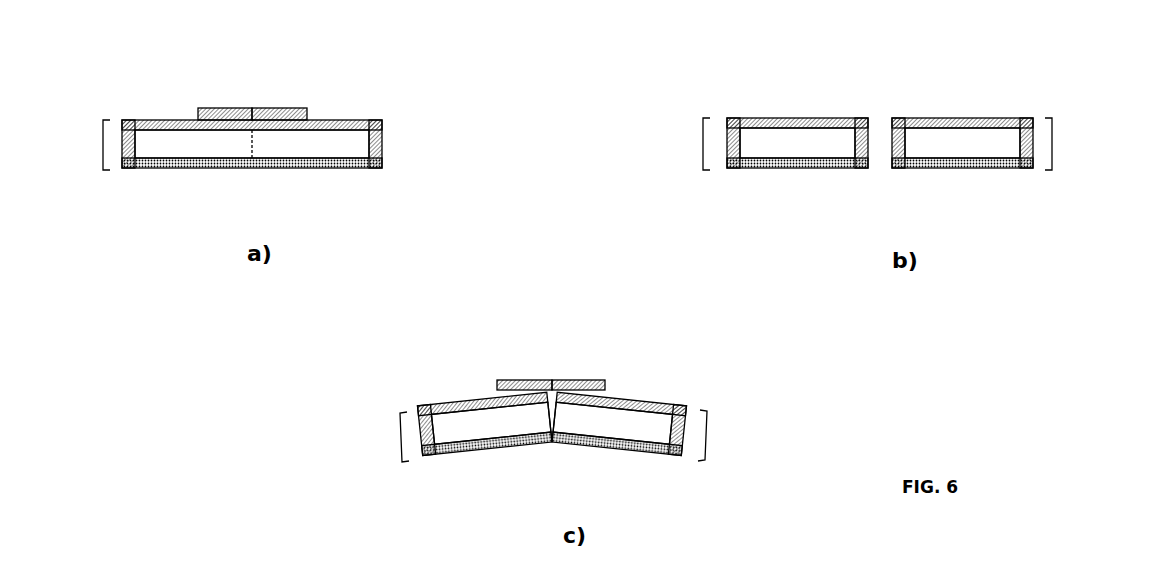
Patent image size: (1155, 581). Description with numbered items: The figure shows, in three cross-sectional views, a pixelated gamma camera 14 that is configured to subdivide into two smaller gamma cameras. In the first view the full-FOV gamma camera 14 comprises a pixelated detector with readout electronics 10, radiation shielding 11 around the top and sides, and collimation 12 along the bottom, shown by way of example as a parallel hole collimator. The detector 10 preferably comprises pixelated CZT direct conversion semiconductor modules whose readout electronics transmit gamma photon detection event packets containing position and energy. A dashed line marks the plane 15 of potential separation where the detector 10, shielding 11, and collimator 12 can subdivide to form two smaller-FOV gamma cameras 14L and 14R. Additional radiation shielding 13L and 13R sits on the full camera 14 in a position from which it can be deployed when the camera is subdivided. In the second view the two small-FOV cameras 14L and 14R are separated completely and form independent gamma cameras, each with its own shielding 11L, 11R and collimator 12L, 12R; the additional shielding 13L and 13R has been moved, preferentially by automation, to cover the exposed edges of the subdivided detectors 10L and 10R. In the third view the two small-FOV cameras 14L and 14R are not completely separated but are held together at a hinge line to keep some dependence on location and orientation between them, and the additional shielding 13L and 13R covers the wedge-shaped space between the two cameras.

The pixelated detector with readout electronics 10 is at (272, 112).
The radiation shielding 11 is at (252, 103).
The collimation 12 is at (258, 200).
The additional radiation shielding 13L is at (568, 208).
The additional radiation shielding 13R is at (625, 209).
The pixelated gamma camera 14 is at (103, 146).
The plane of potential separation 15 is at (208, 180).
The exposed detector 10L is at (645, 250).
The exposed detector 10R is at (804, 249).
The radiation shielding 11L is at (642, 250).
The radiation shielding 11R is at (840, 255).
The collimator 12L is at (645, 335).
The collimator 12R is at (811, 343).
The small-FOV gamma camera 14L is at (703, 148).
The small-FOV gamma camera 14R is at (1052, 148).